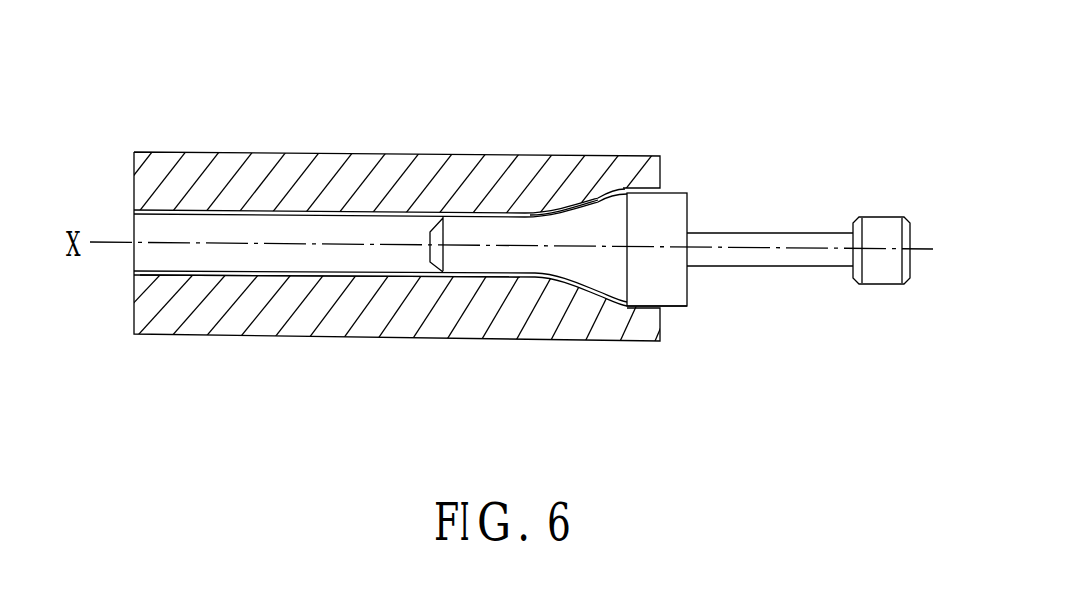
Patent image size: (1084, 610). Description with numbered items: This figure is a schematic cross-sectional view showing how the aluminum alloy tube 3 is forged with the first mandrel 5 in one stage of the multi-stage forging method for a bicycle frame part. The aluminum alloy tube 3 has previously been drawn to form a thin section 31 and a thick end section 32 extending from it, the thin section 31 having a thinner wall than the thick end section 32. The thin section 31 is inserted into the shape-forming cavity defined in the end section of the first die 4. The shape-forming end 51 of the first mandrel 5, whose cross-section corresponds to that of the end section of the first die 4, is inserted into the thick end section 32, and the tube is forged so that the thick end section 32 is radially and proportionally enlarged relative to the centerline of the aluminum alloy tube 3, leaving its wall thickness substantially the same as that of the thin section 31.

The aluminum alloy tube 3 is at (487, 203).
The thin section 31 is at (275, 277).
The thick end section 32 is at (547, 212).
The first die 4 is at (303, 148).
The first mandrel 5 is at (693, 314).
The shape-forming end 51 is at (670, 308).